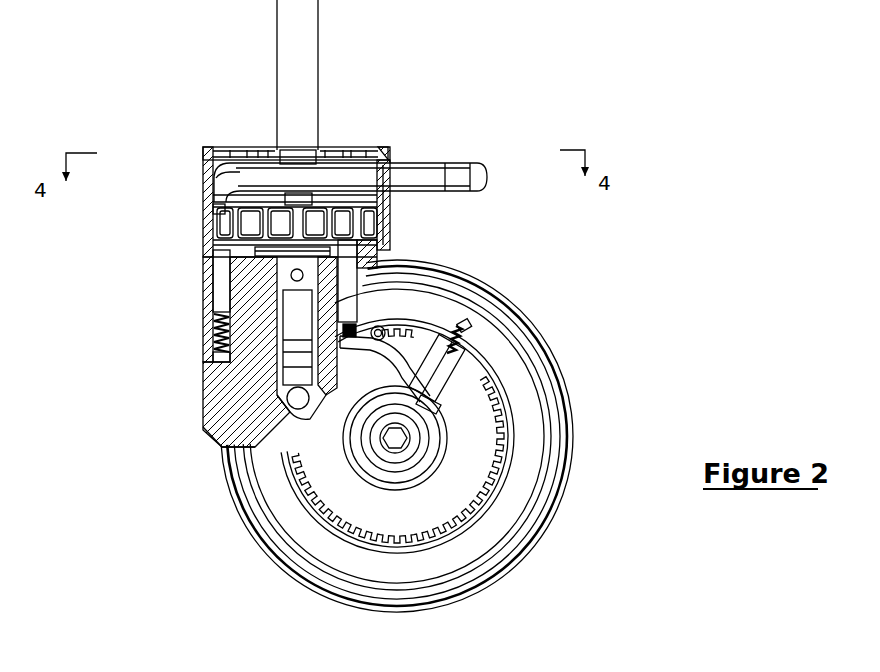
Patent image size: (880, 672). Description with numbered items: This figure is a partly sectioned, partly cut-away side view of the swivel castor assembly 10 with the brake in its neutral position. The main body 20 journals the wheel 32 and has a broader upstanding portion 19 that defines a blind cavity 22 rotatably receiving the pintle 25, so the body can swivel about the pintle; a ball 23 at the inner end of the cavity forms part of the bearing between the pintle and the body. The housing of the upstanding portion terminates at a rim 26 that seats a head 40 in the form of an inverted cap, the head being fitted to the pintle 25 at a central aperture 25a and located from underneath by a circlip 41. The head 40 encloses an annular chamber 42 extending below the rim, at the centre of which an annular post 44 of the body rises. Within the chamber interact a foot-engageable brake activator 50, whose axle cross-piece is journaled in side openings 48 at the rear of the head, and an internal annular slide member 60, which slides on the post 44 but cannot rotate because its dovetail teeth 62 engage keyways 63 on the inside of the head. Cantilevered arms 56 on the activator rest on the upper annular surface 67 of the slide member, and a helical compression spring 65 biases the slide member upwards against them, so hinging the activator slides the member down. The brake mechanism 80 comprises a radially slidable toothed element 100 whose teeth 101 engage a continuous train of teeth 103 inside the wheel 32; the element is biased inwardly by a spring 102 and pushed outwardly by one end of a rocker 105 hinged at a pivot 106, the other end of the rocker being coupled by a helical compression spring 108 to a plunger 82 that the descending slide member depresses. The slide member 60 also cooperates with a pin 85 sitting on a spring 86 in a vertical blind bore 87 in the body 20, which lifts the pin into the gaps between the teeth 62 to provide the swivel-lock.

The swivel castor assembly 10 is at (612, 242).
The upstanding portion 19 is at (200, 318).
The main body 20 is at (132, 357).
The blind cavity 22 is at (255, 358).
The ball 23 is at (286, 403).
The pintle 25 is at (312, 38).
The central aperture 25a is at (322, 147).
The rim 26 is at (248, 253).
The wheel 32 is at (492, 594).
The head 40 is at (201, 146).
The circlip 41 is at (287, 150).
The annular chamber 42 is at (384, 200).
The annular post 44 is at (236, 197).
The side openings 48 is at (215, 146).
The brake activator 50 is at (438, 156).
The cantilevered arms 56 is at (300, 193).
The slide member 60 is at (240, 223).
The dovetail teeth 62 is at (384, 228).
The keyways 63 is at (379, 151).
The helical compression spring 65 is at (230, 257).
The upper annular surface 67 is at (214, 177).
The brake mechanism 80 is at (462, 326).
The plunger 82 is at (212, 345).
The pin 85 is at (212, 285).
The spring 86 is at (212, 360).
The vertical blind bore 87 is at (216, 434).
The toothed element 100 is at (490, 397).
The teeth 101 is at (466, 363).
The spring 102 is at (468, 333).
The train of teeth 103 is at (493, 475).
The rocker 105 is at (372, 361).
The pivot 106 is at (428, 326).
The helical compression spring 108 is at (384, 328).